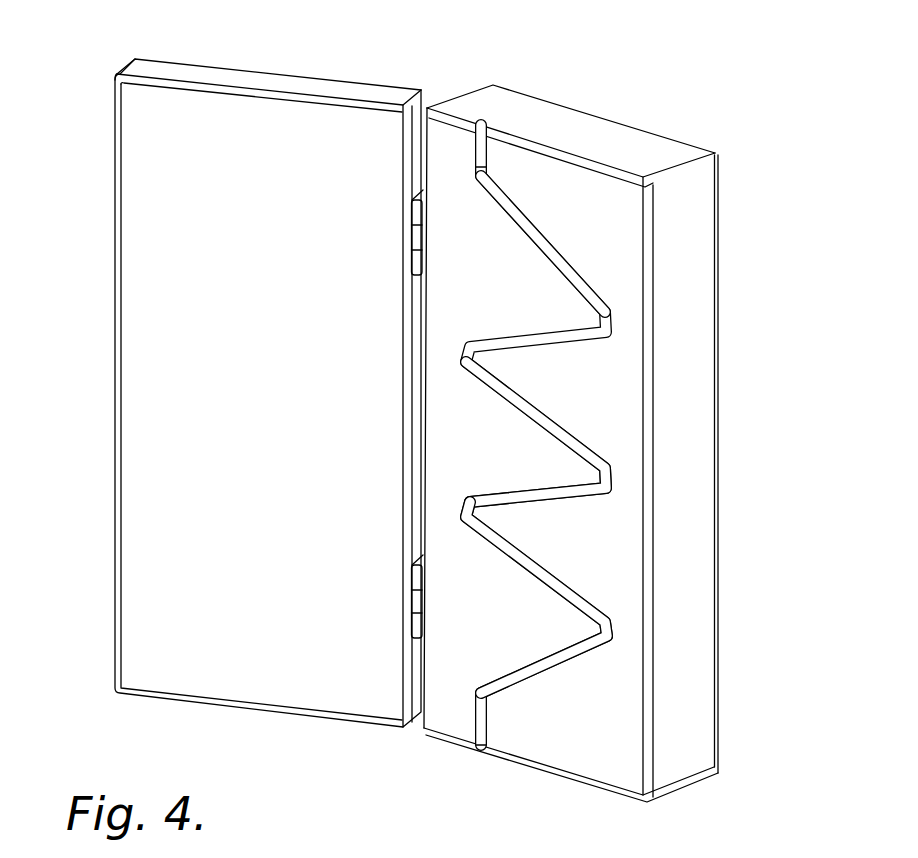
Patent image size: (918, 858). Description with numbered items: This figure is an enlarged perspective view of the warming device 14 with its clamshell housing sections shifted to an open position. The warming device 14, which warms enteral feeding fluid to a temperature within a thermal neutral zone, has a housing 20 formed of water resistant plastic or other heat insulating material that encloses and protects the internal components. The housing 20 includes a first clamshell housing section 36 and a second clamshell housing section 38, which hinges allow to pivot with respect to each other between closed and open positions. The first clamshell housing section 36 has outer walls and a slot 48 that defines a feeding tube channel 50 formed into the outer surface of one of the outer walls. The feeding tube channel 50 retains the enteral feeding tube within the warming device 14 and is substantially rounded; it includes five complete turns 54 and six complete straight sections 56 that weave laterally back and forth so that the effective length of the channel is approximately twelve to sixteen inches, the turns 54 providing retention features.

The warming device 14 is at (606, 413).
The housing 20 is at (400, 66).
The first clamshell housing section 36 is at (676, 152).
The second clamshell housing section 38 is at (140, 66).
The slot 48 is at (575, 262).
The feeding tube channel 50 is at (591, 287).
The turns 54 is at (483, 518).
The straight sections 56 is at (598, 502).